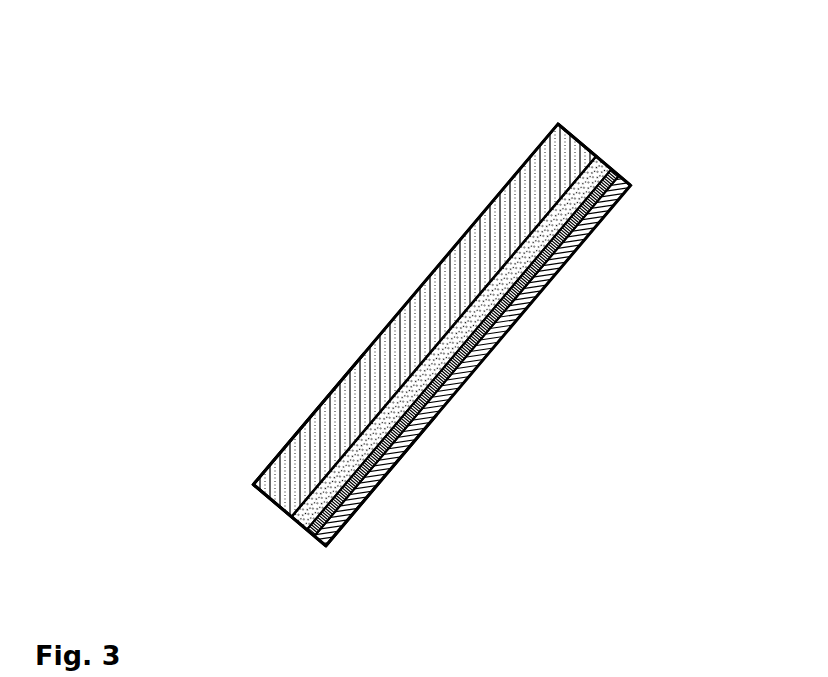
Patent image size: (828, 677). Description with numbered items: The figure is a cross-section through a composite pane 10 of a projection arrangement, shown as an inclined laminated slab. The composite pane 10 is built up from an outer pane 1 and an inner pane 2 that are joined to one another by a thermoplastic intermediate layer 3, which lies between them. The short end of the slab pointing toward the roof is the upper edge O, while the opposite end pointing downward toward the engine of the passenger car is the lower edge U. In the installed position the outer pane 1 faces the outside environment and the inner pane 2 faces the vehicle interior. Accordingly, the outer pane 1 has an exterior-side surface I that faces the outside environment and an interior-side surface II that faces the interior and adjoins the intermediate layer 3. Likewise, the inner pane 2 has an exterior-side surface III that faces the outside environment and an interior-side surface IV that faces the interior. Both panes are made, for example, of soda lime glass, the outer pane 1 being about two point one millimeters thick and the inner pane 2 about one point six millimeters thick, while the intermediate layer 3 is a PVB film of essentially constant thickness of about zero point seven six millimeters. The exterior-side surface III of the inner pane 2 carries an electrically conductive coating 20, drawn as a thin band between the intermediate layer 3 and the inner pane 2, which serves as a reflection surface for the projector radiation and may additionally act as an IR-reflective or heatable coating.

The composite pane 10 is at (318, 240).
The outer pane 1 is at (503, 212).
The thermoplastic intermediate layer 3 is at (596, 161).
The electrically conductive coating 20 is at (605, 172).
The inner pane 2 is at (624, 180).
The upper edge O is at (571, 132).
The lower edge U is at (283, 517).
The exterior-side surface I is at (307, 411).
The interior-side surface II is at (305, 491).
The exterior-side surface III is at (441, 393).
The interior-side surface IV is at (414, 449).